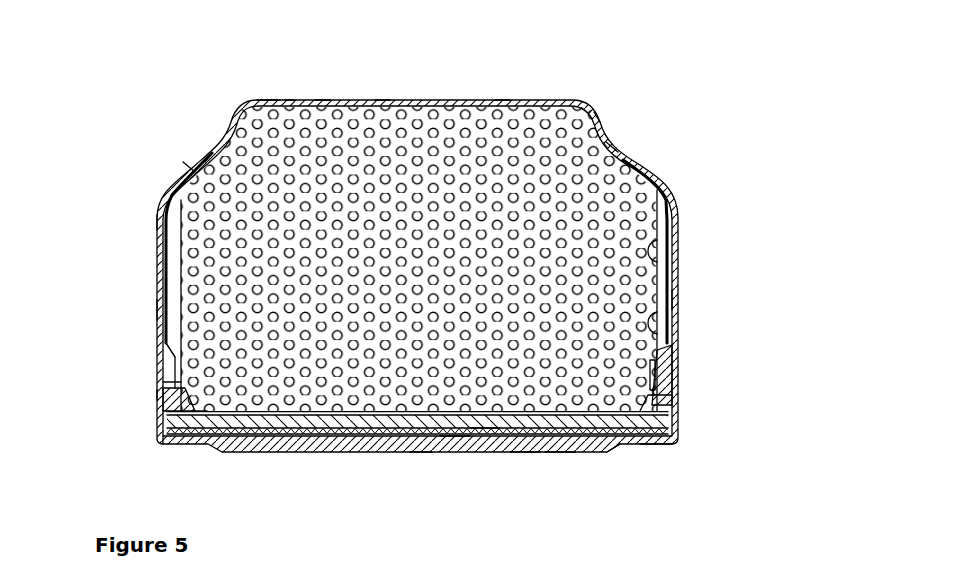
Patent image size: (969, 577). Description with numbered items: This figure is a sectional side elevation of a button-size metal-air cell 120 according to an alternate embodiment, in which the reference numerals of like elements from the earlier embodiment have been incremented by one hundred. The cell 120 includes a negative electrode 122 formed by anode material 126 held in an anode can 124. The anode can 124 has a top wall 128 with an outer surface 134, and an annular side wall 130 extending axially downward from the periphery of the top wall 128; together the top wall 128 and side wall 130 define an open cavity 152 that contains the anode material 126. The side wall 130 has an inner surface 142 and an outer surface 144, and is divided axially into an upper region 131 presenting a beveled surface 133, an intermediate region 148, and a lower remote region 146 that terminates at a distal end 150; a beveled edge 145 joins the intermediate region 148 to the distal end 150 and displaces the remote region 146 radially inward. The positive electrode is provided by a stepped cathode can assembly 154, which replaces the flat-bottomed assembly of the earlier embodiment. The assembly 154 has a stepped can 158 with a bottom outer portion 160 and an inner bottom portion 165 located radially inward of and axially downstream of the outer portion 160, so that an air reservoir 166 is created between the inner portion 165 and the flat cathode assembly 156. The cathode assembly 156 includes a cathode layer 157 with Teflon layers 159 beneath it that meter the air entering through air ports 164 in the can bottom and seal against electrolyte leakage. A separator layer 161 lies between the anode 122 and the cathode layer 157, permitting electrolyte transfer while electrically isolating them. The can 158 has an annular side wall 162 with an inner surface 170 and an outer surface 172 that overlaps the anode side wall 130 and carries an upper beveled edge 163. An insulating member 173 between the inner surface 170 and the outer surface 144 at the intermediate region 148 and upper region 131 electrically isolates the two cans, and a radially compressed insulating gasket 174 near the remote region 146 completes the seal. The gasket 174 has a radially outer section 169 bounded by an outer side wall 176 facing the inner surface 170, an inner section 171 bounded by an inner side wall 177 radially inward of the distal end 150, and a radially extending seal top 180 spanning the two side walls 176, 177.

The cell 120 is at (697, 87).
The negative electrode 122 is at (270, 92).
The anode can 124 is at (322, 97).
The anode material 126 is at (445, 165).
The top wall 128 is at (291, 98).
The annular side wall 130 is at (662, 238).
The upper region 131 is at (610, 150).
The beveled surface 133 is at (598, 118).
The outer surface 134 is at (500, 100).
The inner surface 142 is at (672, 326).
The outer surface 144 is at (676, 304).
The beveled edge 145 is at (660, 365).
The lower remote region 146 is at (668, 378).
The intermediate region 148 is at (680, 280).
The distal end 150 is at (655, 425).
The open cavity 152 is at (383, 100).
The stepped cathode can assembly 154 is at (420, 453).
The cathode assembly 156 is at (335, 415).
The cathode layer 157 is at (485, 440).
The bottom step 158 is at (627, 447).
The Teflon layers 159 is at (450, 445).
The bottom outer portion 160 is at (650, 450).
The separator layer 161 is at (275, 418).
The annular side wall 162 is at (157, 308).
The upper beveled edge 163 is at (183, 162).
The air ports 164 is at (525, 452).
The inner bottom portion 165 is at (560, 455).
The air reservoir 166 is at (400, 430).
The radially outer section 169 is at (163, 382).
The inner surface 170 is at (157, 255).
The inner section 171 is at (165, 433).
The outer surface 172 is at (156, 220).
The insulating member 173 is at (212, 153).
The insulating gasket 174 is at (155, 395).
The outer side wall 176 is at (160, 402).
The inner side wall 177 is at (207, 410).
The seal top 180 is at (160, 365).